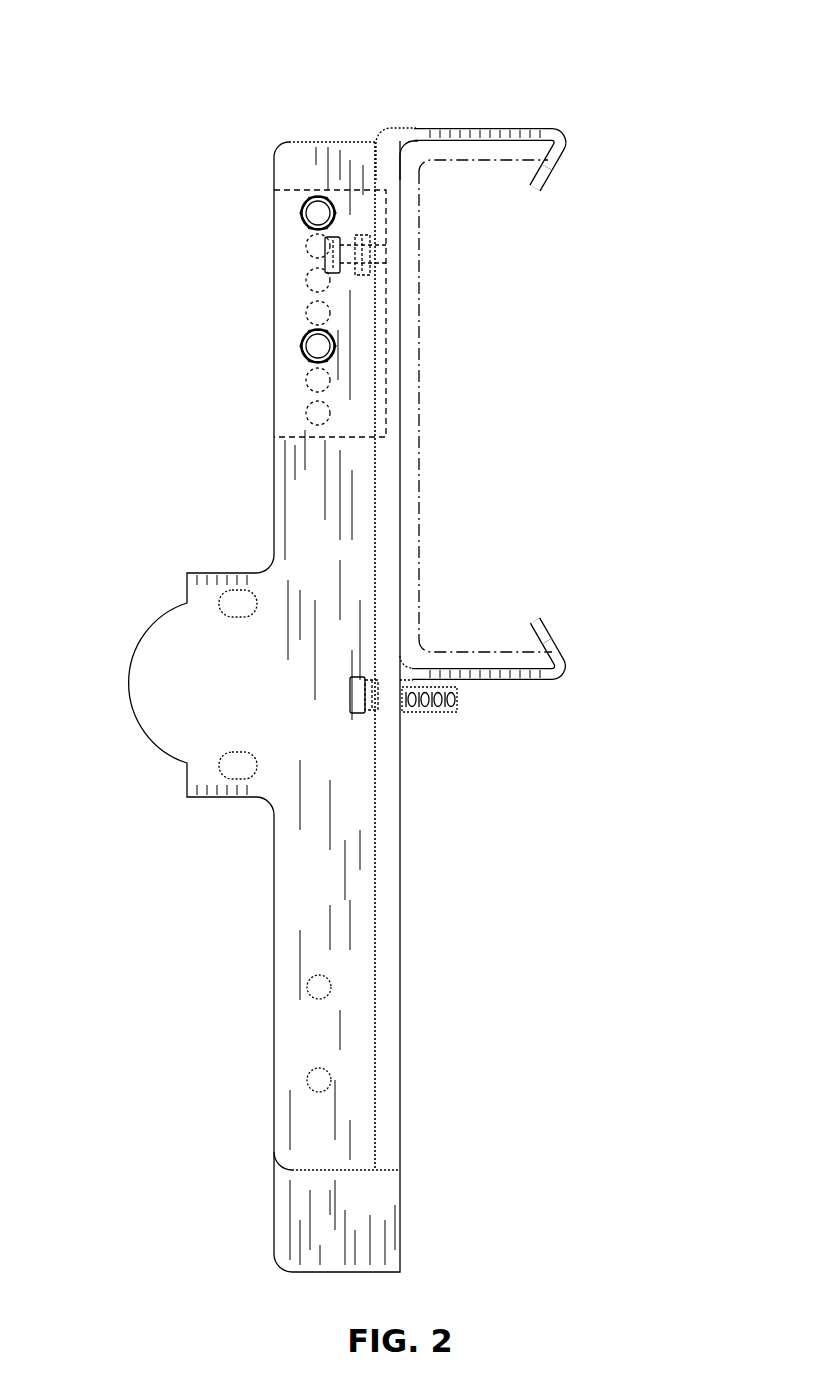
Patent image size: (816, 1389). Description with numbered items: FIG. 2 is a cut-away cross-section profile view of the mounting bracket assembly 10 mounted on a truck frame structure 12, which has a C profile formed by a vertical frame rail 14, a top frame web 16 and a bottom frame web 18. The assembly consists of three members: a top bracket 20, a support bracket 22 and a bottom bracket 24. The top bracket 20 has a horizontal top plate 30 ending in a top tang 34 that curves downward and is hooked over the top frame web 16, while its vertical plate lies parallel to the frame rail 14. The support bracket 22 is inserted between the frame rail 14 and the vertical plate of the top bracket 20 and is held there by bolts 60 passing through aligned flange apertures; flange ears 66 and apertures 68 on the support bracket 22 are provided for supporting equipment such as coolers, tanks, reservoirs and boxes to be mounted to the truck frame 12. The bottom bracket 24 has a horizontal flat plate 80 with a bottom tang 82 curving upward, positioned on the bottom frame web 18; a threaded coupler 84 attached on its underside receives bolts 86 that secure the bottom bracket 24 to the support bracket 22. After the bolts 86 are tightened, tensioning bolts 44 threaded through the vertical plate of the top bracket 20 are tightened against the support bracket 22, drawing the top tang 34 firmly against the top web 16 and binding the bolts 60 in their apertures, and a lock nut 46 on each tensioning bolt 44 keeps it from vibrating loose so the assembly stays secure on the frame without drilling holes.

The mounting bracket assembly 10 is at (168, 60).
The truck frame structure 12 is at (436, 463).
The vertical frame rail 14 is at (418, 333).
The top frame web 16 is at (493, 160).
The bottom frame web 18 is at (470, 650).
The top bracket 20 is at (392, 114).
The support bracket 22 is at (262, 486).
The bottom bracket 24 is at (592, 677).
The top plate 30 is at (520, 127).
The top tang 34 is at (561, 133).
The tensioning bolt 44 is at (322, 252).
The lock nut 46 is at (368, 233).
The bolt 60 is at (315, 210).
The flange ear 66 is at (223, 573).
The aperture 68 is at (318, 975).
The flat plate 80 is at (512, 683).
The bottom tang 82 is at (567, 658).
The threaded coupler 84 is at (420, 713).
The bolt 86 is at (350, 715).